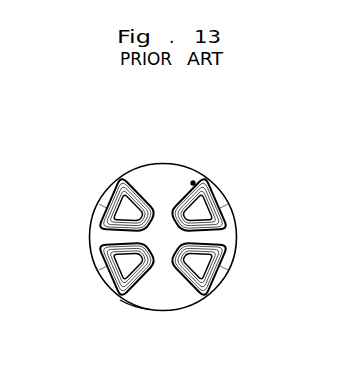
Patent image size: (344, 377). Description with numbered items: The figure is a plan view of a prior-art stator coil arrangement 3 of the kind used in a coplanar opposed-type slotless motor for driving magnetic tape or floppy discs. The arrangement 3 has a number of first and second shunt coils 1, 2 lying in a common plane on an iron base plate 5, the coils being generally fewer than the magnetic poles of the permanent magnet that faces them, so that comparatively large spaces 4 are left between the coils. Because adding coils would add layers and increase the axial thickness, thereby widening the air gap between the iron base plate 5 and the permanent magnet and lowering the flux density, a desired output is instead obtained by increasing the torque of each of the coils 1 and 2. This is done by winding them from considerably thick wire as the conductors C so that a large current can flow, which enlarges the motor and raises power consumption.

The first shunt coil 1 is at (112, 186).
The second shunt coil 2 is at (222, 192).
The stator coil arrangement 3 is at (194, 182).
The spaces 4 is at (165, 181).
The iron base plate 5 is at (132, 305).
The conductors C is at (106, 207).